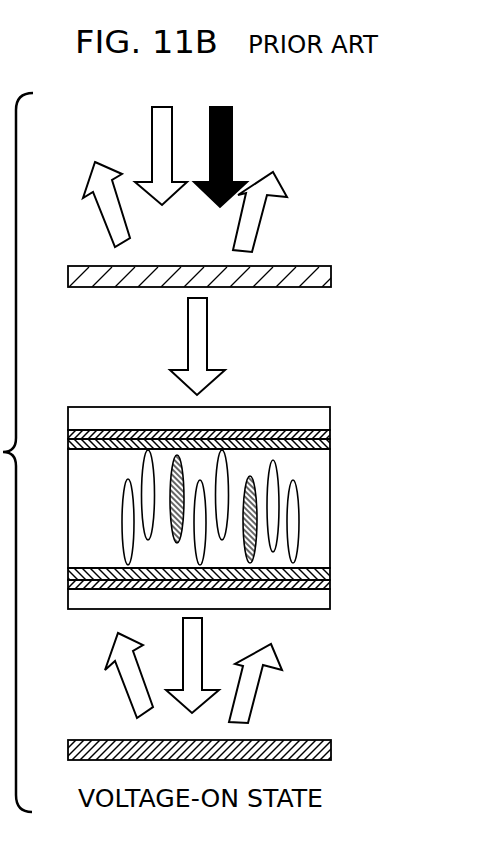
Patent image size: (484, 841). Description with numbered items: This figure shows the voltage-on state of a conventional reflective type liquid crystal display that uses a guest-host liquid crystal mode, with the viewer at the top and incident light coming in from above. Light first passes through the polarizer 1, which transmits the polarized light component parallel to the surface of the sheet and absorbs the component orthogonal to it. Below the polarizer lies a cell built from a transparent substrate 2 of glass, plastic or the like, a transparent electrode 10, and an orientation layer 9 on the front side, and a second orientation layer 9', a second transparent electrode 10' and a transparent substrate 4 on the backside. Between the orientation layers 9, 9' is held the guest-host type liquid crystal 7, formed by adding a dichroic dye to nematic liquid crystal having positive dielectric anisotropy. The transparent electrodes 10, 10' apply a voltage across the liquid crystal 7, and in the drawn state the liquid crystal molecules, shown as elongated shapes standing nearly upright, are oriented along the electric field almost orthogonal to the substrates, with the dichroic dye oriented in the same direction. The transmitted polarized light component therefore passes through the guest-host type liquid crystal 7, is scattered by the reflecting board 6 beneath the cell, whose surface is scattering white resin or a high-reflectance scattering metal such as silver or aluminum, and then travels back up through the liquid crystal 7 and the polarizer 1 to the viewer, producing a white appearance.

The polarizer 1 is at (323, 276).
The transparent substrate 2 is at (330, 418).
The transparent electrode 10 is at (236, 433).
The orientation layer 9 is at (217, 448).
The guest-host type liquid crystal 7 is at (330, 512).
The orientation layer 9' is at (220, 573).
The transparent electrode 10' is at (238, 590).
The transparent substrate 4 is at (327, 600).
The reflecting board 6 is at (328, 751).